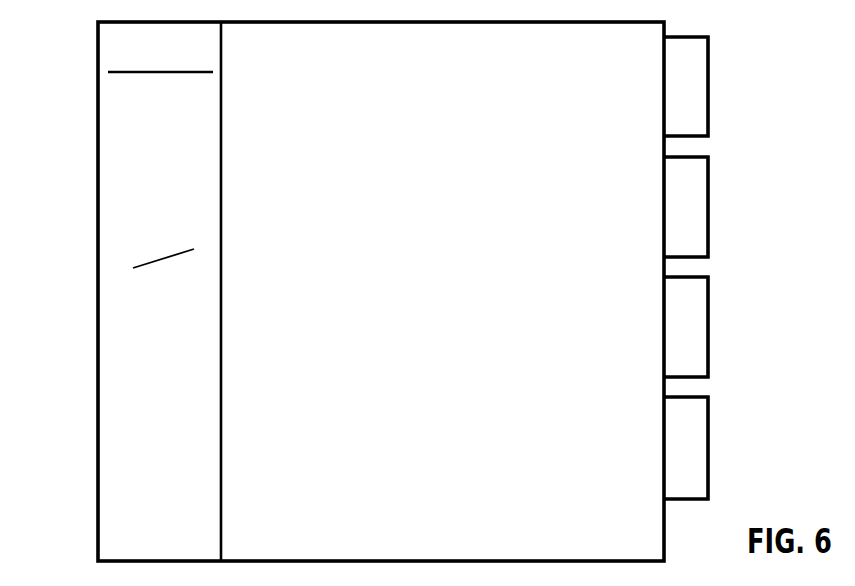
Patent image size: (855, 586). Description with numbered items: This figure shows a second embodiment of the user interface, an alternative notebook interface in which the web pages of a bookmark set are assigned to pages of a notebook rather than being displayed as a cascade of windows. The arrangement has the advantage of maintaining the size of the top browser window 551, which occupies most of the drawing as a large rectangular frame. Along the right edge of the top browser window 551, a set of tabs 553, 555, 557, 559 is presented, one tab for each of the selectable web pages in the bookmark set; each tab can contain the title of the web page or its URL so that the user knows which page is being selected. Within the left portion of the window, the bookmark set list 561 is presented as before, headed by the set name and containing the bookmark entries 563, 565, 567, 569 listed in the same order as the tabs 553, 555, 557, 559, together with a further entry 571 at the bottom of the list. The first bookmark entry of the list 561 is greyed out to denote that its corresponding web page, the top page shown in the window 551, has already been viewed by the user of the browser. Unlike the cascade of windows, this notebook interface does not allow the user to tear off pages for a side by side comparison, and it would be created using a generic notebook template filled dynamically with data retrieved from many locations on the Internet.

The top browser window 551 is at (626, 542).
The bookmark set list 561 is at (180, 540).
The bookmark entry 563 is at (127, 97).
The bookmark entry 565 is at (127, 137).
The bookmark entry 567 is at (127, 177).
The bookmark entry 569 is at (127, 217).
The URL 5 entry 571 is at (127, 257).
The tab 553 is at (708, 76).
The tab 555 is at (708, 197).
The tab 557 is at (708, 317).
The tab 559 is at (708, 440).